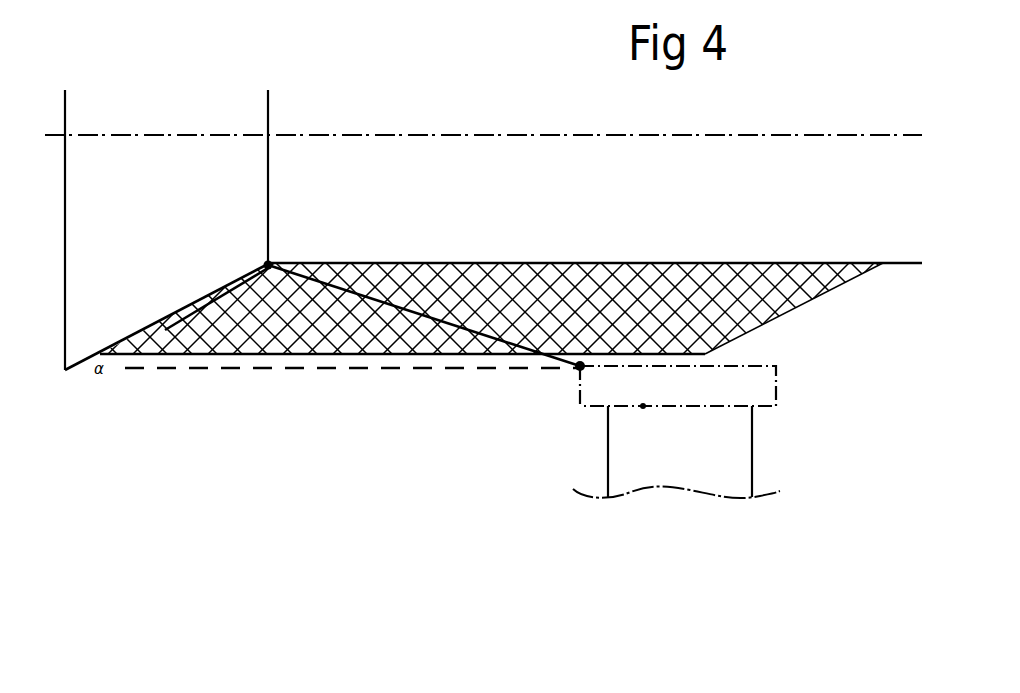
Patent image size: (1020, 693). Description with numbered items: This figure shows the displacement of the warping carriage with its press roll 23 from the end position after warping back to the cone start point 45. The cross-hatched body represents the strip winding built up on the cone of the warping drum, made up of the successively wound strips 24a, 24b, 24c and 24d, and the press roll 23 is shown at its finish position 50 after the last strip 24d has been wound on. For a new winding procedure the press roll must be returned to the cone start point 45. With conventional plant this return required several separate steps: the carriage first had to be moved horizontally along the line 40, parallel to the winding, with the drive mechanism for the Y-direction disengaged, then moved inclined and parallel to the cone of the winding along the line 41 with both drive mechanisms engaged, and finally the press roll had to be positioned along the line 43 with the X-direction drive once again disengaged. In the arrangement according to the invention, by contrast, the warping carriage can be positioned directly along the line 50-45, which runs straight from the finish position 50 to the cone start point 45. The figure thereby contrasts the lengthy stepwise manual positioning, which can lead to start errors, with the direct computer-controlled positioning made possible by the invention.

The cone start point 45 is at (268, 264).
The line 41 is at (165, 353).
The line 43 is at (272, 283).
The strip 24a is at (231, 332).
The line 40 is at (283, 368).
The strip 24b is at (351, 333).
The line 50-45 is at (399, 315).
The strip 24c is at (535, 322).
The finish position 50 is at (582, 406).
The press roll 23 is at (643, 406).
The strip 24d is at (720, 317).